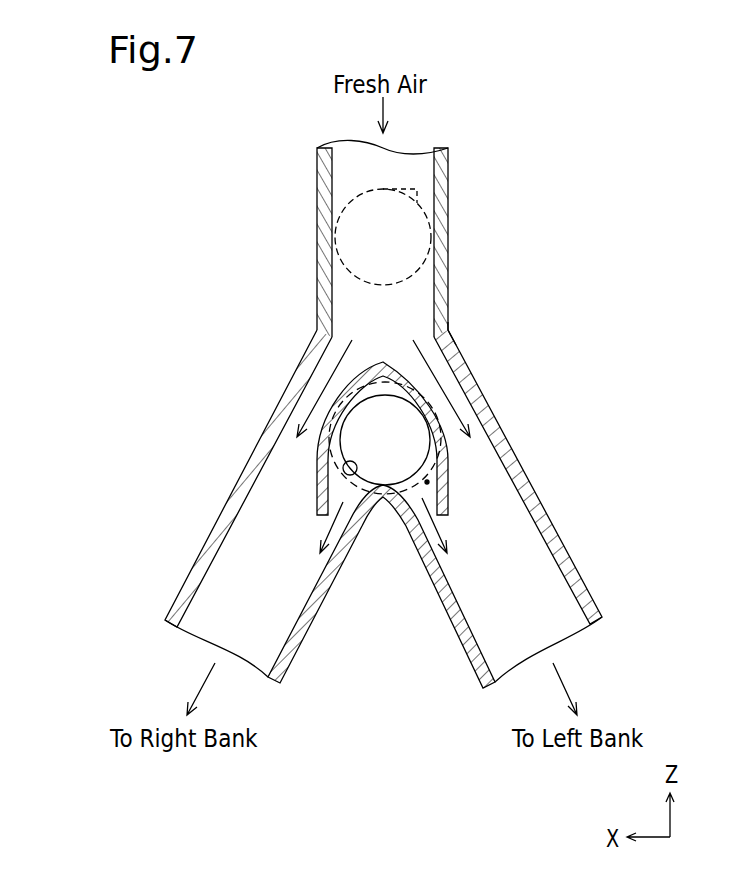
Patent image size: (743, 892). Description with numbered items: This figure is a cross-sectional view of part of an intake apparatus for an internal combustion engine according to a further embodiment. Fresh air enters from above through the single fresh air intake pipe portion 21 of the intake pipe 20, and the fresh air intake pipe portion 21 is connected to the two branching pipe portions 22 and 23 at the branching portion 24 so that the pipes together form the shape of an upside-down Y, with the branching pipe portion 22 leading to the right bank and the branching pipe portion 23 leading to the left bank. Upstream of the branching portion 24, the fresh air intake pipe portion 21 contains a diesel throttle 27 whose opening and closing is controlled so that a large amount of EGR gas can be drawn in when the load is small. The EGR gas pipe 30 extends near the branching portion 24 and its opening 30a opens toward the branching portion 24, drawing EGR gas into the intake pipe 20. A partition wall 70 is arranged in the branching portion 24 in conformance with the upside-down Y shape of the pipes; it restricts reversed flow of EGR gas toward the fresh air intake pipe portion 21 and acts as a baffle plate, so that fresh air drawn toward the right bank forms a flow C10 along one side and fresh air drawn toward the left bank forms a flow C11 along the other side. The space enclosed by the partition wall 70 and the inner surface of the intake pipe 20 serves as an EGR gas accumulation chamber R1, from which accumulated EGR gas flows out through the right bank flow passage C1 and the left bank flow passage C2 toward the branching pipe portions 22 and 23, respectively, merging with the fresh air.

The intake pipe 20 is at (450, 170).
The fresh air intake pipe portion 21 is at (450, 243).
The branching pipe portion 22 is at (187, 580).
The branching pipe portion 23 is at (585, 580).
The branching portion 24 is at (455, 337).
The diesel throttle 27 is at (417, 196).
The EGR gas pipe 30 is at (367, 515).
The opening 30a is at (344, 472).
The partition wall 70 is at (449, 493).
The EGR gas accumulation chamber R1 is at (429, 481).
The right bank flow passage C1 is at (335, 530).
The left bank flow passage C2 is at (437, 528).
The flow C10 is at (354, 350).
The flow C11 is at (411, 350).